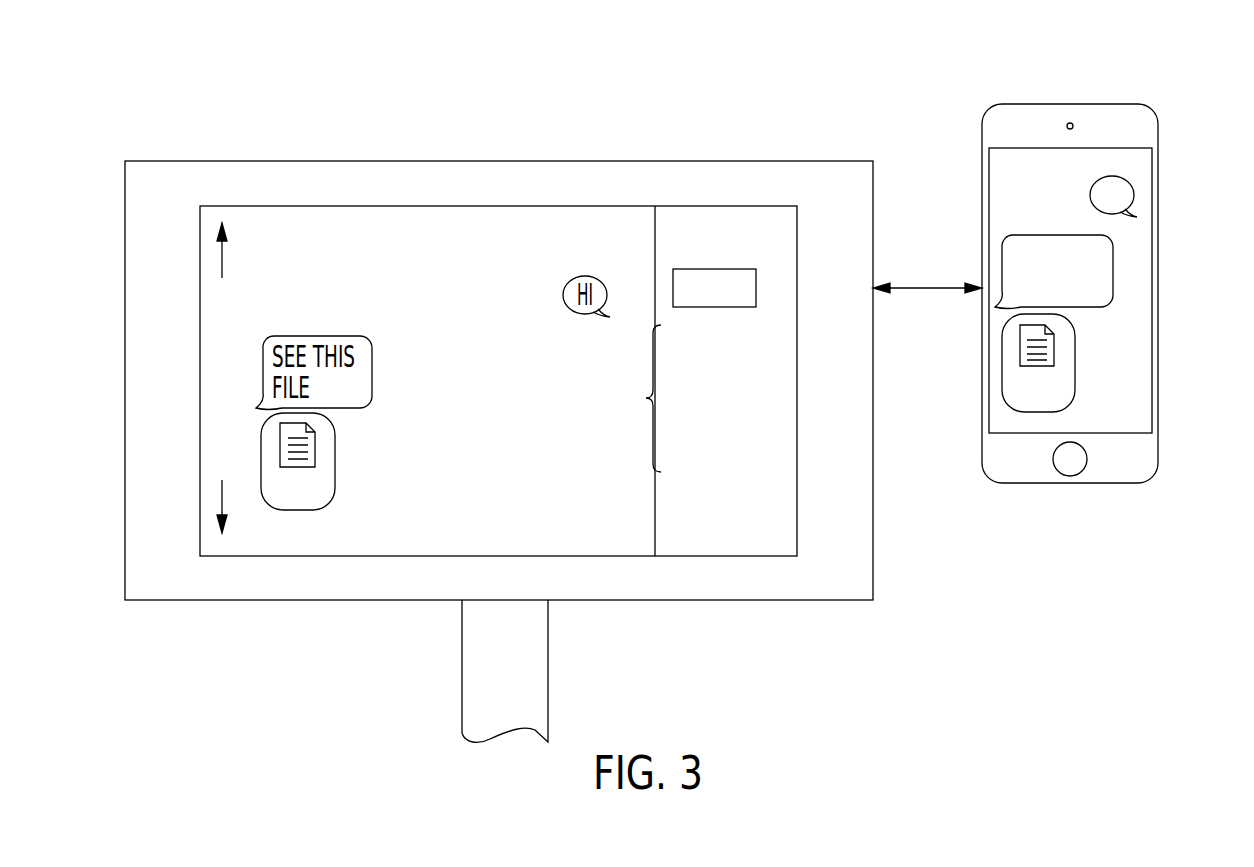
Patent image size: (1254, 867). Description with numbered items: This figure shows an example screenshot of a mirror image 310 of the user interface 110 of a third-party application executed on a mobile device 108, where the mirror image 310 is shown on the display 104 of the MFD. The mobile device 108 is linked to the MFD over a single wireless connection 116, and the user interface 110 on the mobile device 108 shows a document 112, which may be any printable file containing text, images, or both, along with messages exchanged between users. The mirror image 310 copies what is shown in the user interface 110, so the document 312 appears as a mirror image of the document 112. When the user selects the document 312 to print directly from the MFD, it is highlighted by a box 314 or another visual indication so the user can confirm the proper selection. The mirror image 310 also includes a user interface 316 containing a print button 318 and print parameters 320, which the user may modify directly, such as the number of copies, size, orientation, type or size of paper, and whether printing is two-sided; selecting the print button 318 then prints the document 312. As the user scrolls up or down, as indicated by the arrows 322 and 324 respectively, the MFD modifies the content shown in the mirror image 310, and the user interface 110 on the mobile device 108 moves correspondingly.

The display 104 is at (508, 161).
The mobile device 108 is at (1073, 101).
The user interface 110 is at (1138, 172).
The document 112 is at (1055, 346).
The wireless connection 116 is at (923, 289).
The mirror image 310 is at (383, 272).
The document 312 is at (315, 445).
The box 314 is at (333, 460).
The user interface 316 is at (703, 223).
The print button 318 is at (757, 290).
The print parameters 320 is at (646, 398).
The arrow 322 is at (222, 257).
The arrow 324 is at (222, 508).